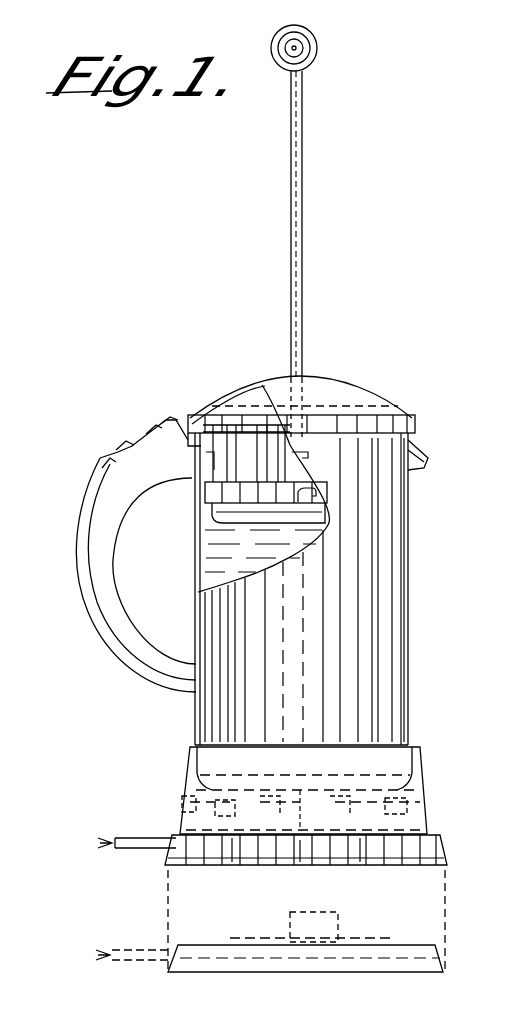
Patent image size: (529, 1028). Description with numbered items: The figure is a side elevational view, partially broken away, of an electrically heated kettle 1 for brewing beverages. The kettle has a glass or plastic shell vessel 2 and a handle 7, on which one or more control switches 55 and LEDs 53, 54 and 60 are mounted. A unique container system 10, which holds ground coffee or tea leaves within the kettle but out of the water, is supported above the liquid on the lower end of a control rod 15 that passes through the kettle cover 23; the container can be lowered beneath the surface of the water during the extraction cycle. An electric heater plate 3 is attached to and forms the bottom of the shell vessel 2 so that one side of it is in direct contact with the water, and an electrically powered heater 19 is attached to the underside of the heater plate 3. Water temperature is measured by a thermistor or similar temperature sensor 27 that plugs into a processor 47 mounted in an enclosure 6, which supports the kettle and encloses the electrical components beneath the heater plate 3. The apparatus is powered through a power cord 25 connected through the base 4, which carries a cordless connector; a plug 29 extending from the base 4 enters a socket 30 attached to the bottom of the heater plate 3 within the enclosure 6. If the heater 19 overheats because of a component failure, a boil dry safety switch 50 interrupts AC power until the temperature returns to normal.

The electrically heated kettle 1 is at (155, 312).
The shell vessel 2 is at (200, 559).
The heater plate 3 is at (344, 3).
The base 4 is at (443, 960).
The enclosure 6 is at (417, 774).
The handle 7 is at (93, 565).
The container system 10 is at (196, 512).
The control rod 15 is at (291, 215).
The heater 19 is at (365, 837).
The kettle cover 23 is at (292, 392).
The power cord 25 is at (134, 838).
The temperature sensor 27 is at (181, 804).
The plug 29 is at (303, 922).
The socket 30 is at (312, 858).
The processor 47 is at (243, 866).
The boil dry safety switch 50 is at (426, 815).
The LED 53 is at (167, 417).
The LED 54 is at (155, 418).
The control switch 55 is at (121, 441).
The LED 60 is at (107, 464).